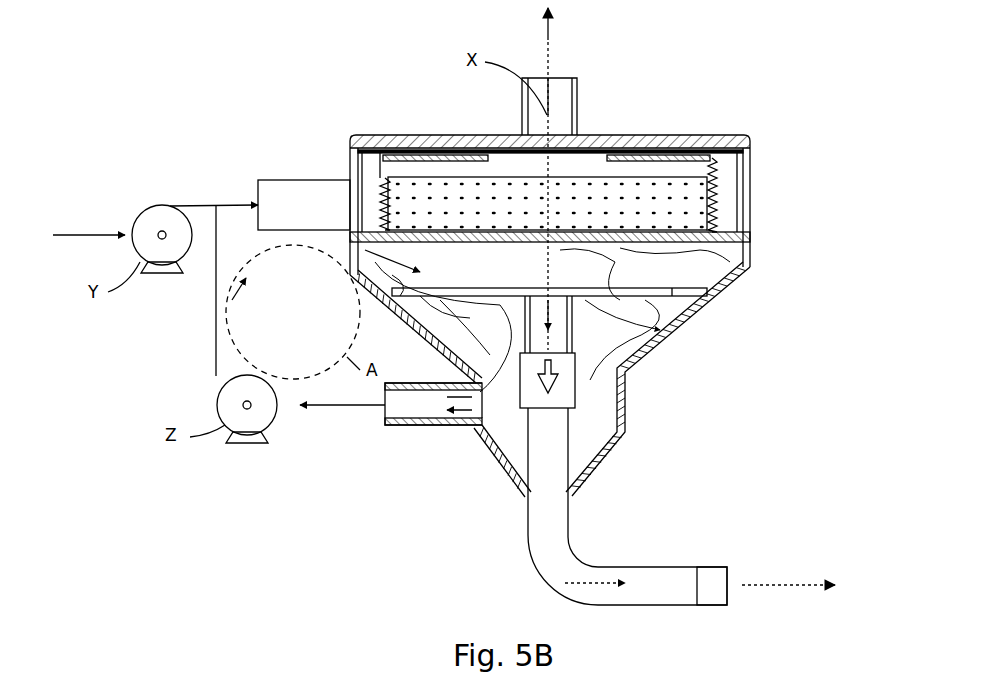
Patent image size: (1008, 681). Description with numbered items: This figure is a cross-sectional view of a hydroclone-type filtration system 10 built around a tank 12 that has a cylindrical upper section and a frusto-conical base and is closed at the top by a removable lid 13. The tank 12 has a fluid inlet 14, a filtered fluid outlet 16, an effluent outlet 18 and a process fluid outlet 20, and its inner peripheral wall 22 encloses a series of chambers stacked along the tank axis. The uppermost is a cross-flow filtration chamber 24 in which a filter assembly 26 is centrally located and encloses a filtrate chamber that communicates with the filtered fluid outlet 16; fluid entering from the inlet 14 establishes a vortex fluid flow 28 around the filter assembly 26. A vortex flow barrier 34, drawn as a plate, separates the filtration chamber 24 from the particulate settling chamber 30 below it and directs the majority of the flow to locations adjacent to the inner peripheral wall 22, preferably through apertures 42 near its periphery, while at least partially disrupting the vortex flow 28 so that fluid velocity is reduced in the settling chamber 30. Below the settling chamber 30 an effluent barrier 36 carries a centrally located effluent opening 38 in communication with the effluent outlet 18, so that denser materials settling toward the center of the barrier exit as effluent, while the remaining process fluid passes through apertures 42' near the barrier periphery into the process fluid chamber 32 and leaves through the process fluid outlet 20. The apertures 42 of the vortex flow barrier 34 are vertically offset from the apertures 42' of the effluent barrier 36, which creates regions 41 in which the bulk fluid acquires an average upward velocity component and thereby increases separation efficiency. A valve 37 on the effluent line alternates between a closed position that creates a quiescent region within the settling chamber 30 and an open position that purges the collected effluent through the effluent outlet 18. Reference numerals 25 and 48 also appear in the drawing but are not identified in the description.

The system 10 is at (732, 76).
The tank 12 is at (653, 352).
The removable lid 13 is at (423, 142).
The fluid inlet 14 is at (278, 192).
The filtered fluid outlet 16 is at (578, 100).
The effluent outlet 18 is at (570, 530).
The process fluid outlet 20 is at (418, 427).
The inner peripheral wall 22 is at (625, 397).
The cross-flow filtration chamber 24 is at (735, 168).
The spring seal 25 is at (383, 205).
The filter assembly 26 is at (652, 178).
The vortex fluid flow 28 is at (484, 433).
The particulate settling chamber 30 is at (745, 270).
The process fluid chamber 32 is at (655, 336).
The vortex flow barrier 34 is at (358, 262).
The effluent barrier 36 is at (432, 340).
The valve 37 is at (715, 606).
The effluent opening 38 is at (545, 240).
The regions 41 is at (712, 293).
The apertures 42 is at (778, 249).
The apertures 42' is at (723, 316).
The collection chamber 48 is at (615, 420).